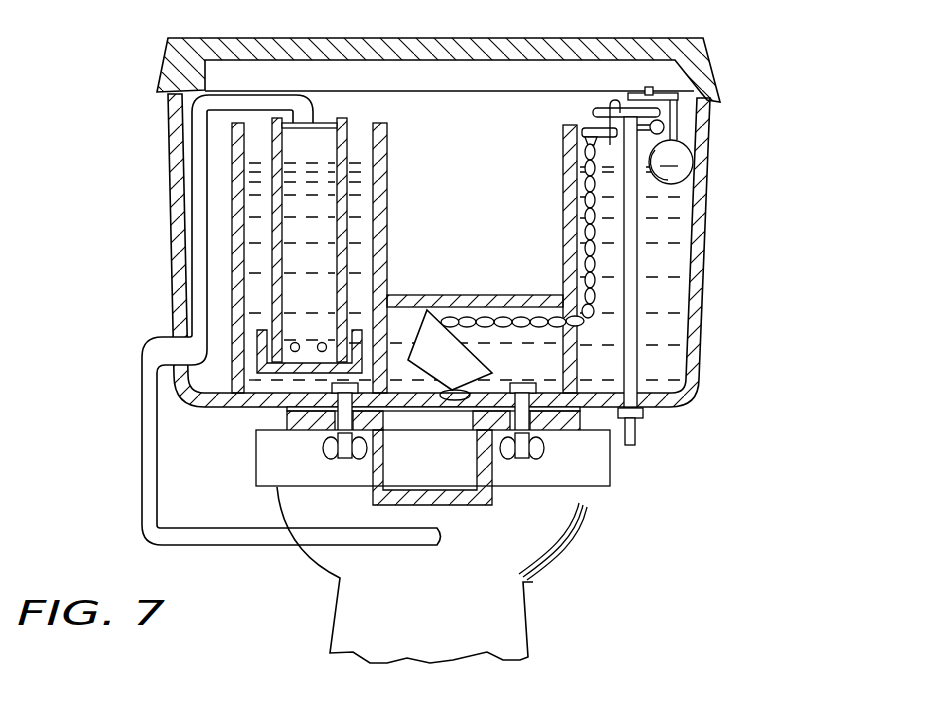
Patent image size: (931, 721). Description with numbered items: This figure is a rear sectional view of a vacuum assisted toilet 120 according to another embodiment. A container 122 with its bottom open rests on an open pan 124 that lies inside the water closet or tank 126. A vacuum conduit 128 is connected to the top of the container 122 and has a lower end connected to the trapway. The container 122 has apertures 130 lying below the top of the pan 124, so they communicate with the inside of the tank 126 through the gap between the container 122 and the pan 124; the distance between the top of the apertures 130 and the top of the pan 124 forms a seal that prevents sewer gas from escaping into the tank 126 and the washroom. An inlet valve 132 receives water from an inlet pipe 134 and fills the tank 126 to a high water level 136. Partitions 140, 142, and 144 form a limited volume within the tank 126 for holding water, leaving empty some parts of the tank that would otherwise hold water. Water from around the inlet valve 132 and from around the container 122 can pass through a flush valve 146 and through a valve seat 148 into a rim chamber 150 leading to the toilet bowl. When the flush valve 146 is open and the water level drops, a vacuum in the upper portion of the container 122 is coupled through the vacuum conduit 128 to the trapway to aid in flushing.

The vacuum assisted toilet 120 is at (772, 243).
The container 122 is at (270, 234).
The pan 124 is at (258, 346).
The tank 126 is at (700, 283).
The vacuum conduit 128 is at (143, 496).
The apertures 130 is at (293, 341).
The inlet valve 132 is at (690, 127).
The inlet pipe 134 is at (637, 430).
The high water level 136 is at (268, 162).
The partition 140 is at (563, 138).
The partition 142 is at (390, 137).
The partition 144 is at (240, 130).
The flush valve 146 is at (477, 355).
The valve seat 148 is at (412, 407).
The rim chamber 150 is at (385, 468).